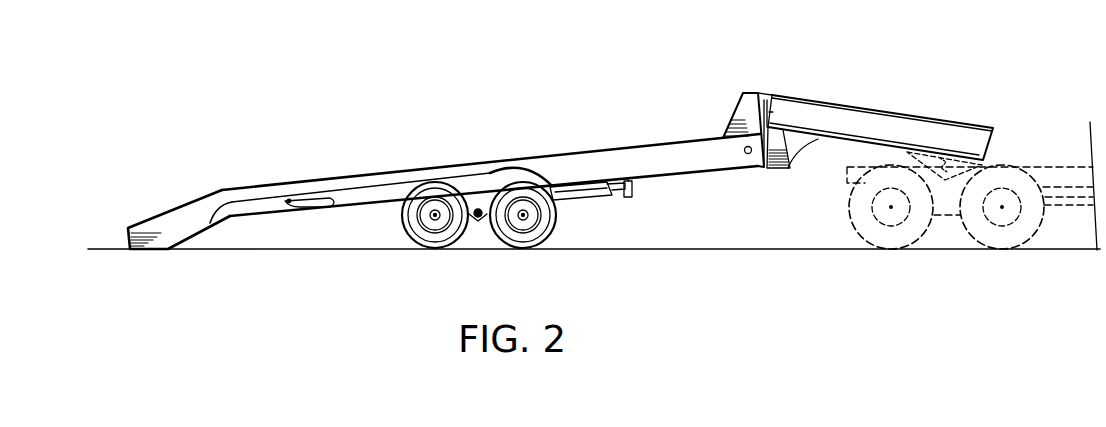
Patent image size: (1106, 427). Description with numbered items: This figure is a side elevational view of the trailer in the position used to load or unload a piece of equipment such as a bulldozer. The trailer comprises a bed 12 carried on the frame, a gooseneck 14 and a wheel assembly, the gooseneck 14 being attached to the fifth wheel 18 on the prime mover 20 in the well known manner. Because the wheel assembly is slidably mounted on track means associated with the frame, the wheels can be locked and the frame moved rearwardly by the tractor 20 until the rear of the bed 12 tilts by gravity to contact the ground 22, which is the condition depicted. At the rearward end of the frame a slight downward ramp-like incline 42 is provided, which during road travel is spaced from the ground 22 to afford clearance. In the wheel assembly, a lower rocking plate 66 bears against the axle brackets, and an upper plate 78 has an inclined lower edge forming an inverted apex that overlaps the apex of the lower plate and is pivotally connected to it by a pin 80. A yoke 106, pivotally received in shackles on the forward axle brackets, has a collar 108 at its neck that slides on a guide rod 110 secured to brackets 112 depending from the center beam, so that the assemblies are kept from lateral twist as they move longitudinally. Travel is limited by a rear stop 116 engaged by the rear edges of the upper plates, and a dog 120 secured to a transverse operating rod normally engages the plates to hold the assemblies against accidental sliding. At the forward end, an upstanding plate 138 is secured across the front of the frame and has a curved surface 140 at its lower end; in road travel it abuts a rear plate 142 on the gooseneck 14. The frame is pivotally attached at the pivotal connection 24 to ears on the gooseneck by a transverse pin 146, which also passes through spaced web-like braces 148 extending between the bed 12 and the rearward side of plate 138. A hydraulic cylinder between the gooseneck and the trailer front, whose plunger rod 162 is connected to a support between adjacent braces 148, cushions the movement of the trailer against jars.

The bed 12 is at (548, 154).
The gooseneck 14 is at (994, 139).
The fifth wheel 18 is at (933, 150).
The prime mover 20 is at (1044, 238).
The ground 22 is at (101, 249).
The pivotal connection 24 is at (729, 151).
The ramp-like incline 42 is at (165, 212).
The rocking plate 66 is at (488, 223).
The upper plate 78 is at (482, 198).
The pin 80 is at (477, 219).
The yoke 106 is at (590, 207).
The collar 108 is at (611, 192).
The guide rod 110 is at (580, 192).
The bracket 112 is at (634, 189).
The rear stop 116 is at (256, 220).
The dog 120 is at (310, 197).
The upstanding plate 138 is at (758, 92).
The curved surface 140 is at (763, 168).
The rear plate 142 is at (770, 97).
The pin 146 is at (746, 154).
The web like brace 148 is at (739, 103).
The plunger rod 162 is at (773, 113).